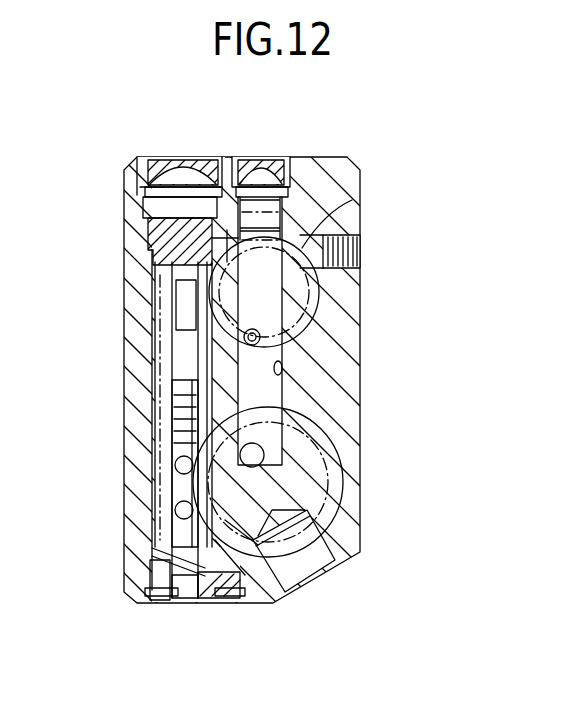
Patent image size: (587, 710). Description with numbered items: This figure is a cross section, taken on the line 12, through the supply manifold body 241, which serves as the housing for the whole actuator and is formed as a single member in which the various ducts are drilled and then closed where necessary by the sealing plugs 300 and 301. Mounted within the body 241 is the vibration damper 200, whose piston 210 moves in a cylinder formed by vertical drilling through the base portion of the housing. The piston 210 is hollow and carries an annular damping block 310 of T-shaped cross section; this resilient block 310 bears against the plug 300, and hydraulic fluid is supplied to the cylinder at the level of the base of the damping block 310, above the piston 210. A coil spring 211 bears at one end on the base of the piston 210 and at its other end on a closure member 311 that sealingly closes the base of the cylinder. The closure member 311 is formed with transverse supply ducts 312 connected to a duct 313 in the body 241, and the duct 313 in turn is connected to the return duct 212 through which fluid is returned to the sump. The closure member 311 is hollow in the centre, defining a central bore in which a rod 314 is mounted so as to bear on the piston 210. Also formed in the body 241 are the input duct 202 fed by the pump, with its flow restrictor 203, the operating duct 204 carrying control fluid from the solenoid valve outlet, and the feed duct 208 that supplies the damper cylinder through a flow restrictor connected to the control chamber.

The section line 12- 12 is at (322, 601).
The vibration damper 200 is at (172, 440).
The input duct 202 is at (318, 578).
The flow restrictor 203 is at (291, 583).
The operating duct 204 is at (283, 370).
The feed duct 208 is at (302, 232).
The piston 210 is at (152, 327).
The spring 211 is at (160, 372).
The return duct 212 is at (235, 603).
The body 241 is at (328, 158).
The sealing plug 300 is at (158, 158).
The sealing plug 301 is at (264, 158).
The annular damping block 310 is at (150, 232).
The closure member 311 is at (165, 602).
The transverse supply ducts 312 is at (150, 558).
The duct 313 is at (228, 600).
The rod 314 is at (182, 400).